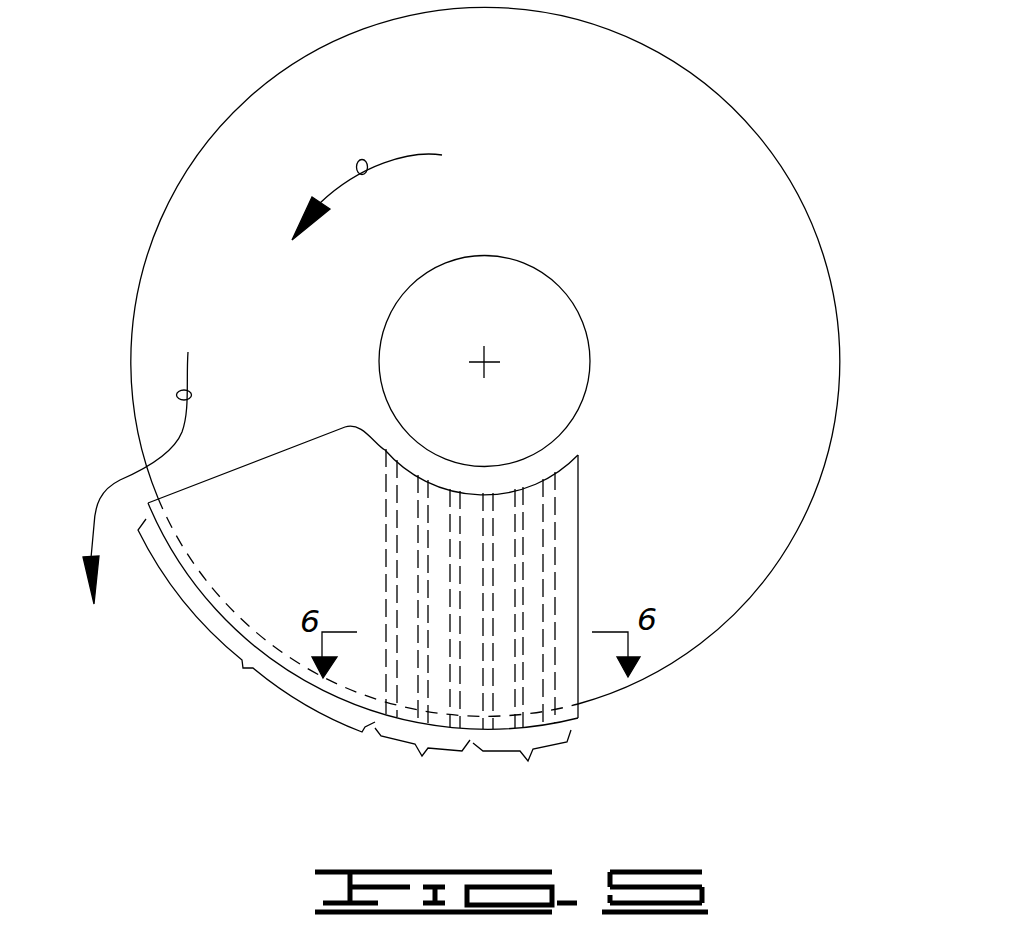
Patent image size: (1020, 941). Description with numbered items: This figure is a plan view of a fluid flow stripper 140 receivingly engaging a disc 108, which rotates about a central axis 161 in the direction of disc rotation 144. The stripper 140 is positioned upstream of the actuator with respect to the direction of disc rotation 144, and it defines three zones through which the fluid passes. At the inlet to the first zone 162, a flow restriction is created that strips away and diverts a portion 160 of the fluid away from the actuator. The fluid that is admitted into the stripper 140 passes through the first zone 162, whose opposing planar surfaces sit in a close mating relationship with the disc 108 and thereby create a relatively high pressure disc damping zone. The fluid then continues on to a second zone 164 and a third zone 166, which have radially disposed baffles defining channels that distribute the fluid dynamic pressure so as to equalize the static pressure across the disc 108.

The disc 108 is at (730, 207).
The fluid flow stripper 140 is at (578, 535).
The direction of disc rotation 144 is at (359, 160).
The portion of the fluid 160 is at (176, 396).
The central axis 161 is at (500, 338).
The first zone 162 is at (240, 668).
The second zone 164 is at (421, 757).
The third zone 166 is at (528, 760).